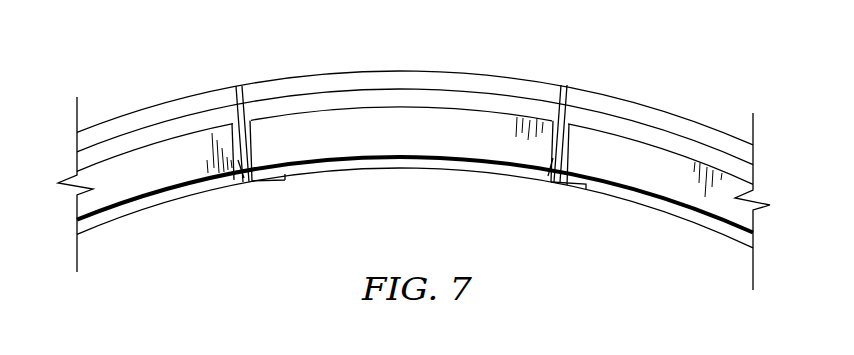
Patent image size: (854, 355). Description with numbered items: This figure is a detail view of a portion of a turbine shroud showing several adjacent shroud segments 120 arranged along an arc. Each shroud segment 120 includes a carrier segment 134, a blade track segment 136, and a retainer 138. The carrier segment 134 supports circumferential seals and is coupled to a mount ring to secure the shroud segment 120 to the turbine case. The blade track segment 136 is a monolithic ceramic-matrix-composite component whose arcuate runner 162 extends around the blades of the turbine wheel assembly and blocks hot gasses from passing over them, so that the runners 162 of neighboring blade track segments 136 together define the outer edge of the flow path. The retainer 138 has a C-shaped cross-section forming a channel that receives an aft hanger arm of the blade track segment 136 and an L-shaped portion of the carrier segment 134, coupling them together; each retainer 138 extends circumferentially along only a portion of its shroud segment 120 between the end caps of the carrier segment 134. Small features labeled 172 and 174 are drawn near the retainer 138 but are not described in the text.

The shroud segment 120 is at (163, 90).
The carrier segment 134 is at (95, 117).
The blade track segment 136 is at (200, 204).
The retainer 138 is at (150, 165).
The arcuate runner 162 is at (148, 206).
The tab 172 is at (276, 173).
The clip 174 is at (241, 171).